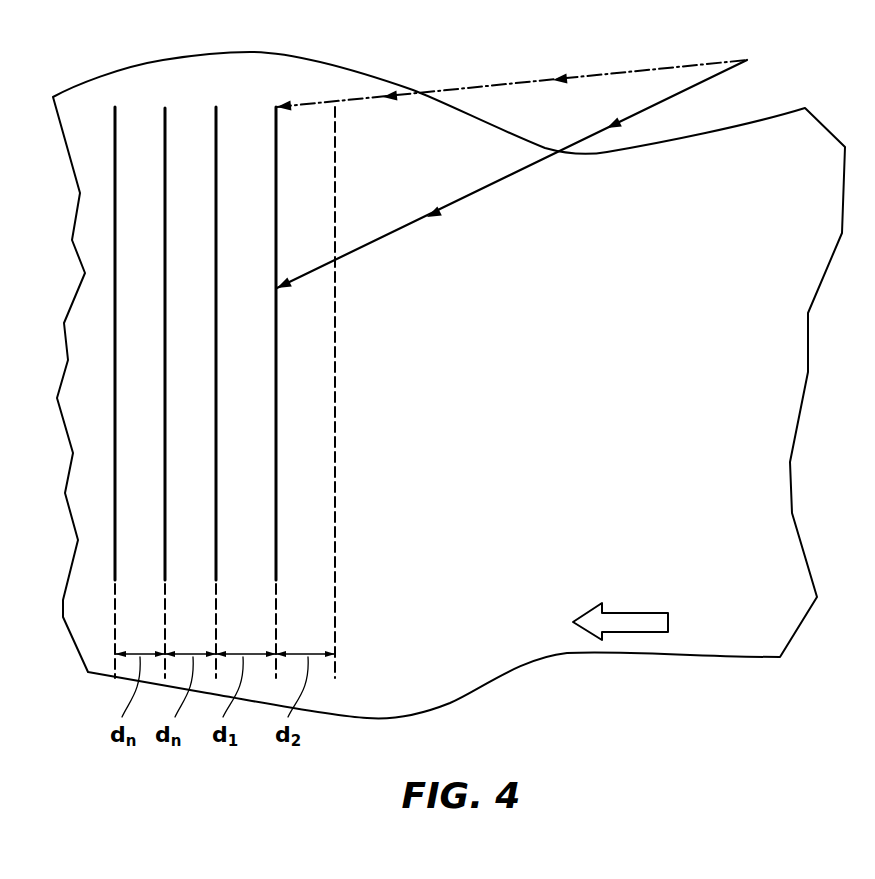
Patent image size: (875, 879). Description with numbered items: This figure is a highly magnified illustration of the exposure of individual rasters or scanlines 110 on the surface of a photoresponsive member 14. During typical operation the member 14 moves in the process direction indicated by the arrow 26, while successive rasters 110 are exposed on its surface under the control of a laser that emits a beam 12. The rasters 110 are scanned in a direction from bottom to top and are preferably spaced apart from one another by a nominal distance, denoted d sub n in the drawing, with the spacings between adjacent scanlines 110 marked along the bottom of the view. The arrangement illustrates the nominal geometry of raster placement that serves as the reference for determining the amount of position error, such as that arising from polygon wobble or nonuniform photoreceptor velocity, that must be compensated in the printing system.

The beam 12 is at (472, 88).
The photoresponsive member 14 is at (805, 393).
The arrow 26 is at (627, 615).
The rasters 110 is at (216, 125).